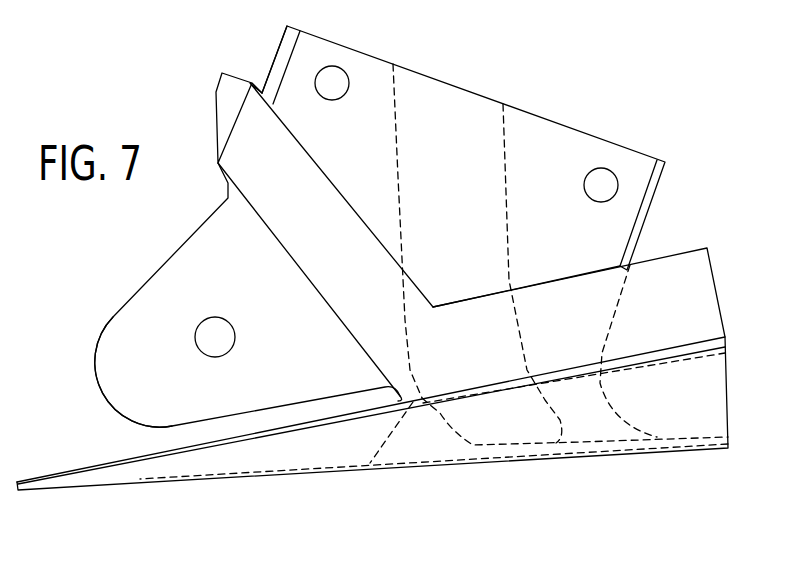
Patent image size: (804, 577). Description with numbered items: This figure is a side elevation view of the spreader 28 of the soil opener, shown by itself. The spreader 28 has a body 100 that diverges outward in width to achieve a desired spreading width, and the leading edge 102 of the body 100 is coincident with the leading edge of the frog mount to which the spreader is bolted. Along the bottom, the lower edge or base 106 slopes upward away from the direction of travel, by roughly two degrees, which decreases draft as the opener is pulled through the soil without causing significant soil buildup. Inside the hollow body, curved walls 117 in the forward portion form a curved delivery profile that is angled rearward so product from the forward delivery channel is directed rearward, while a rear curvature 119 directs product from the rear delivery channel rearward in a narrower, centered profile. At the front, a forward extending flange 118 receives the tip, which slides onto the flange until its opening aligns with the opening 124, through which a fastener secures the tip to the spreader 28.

The spreader 28 is at (685, 143).
The body 100 is at (223, 295).
The leading edge 102 is at (215, 127).
The base 106 is at (575, 459).
The curved walls 117 is at (398, 176).
The forward extending flange 118 is at (113, 345).
The rear curvature 119 is at (623, 300).
The opening 124 is at (217, 326).